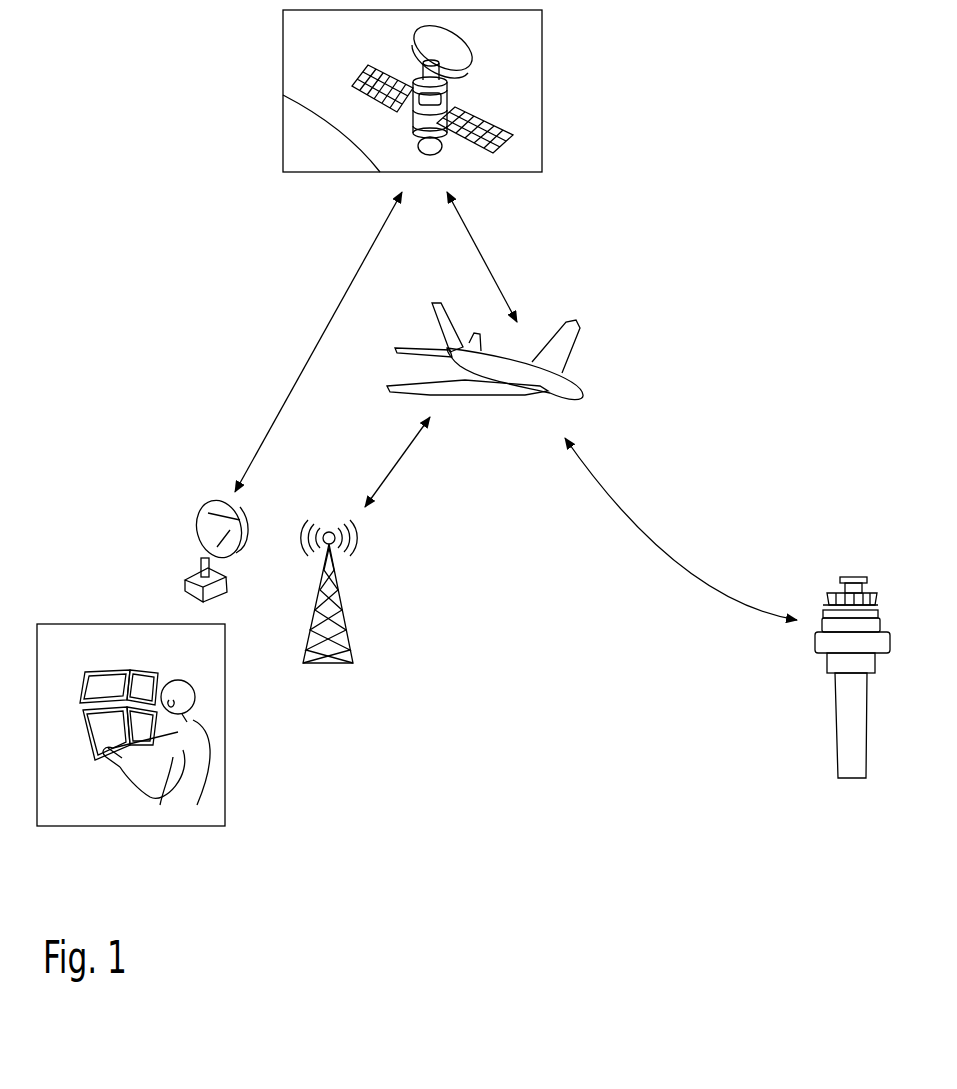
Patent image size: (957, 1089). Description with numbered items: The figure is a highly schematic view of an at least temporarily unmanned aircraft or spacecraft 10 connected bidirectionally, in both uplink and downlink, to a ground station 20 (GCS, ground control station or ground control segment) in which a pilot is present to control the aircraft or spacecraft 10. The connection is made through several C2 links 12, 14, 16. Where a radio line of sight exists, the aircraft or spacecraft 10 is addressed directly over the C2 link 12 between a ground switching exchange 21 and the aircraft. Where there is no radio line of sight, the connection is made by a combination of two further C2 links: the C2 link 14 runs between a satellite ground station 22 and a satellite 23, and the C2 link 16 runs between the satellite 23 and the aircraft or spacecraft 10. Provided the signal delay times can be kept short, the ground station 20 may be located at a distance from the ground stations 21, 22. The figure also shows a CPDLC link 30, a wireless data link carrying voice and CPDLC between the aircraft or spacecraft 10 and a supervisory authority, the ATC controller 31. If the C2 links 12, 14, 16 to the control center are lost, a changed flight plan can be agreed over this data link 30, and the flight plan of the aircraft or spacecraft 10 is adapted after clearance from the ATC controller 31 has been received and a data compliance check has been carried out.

The aircraft or spacecraft 10 is at (590, 366).
The C2 link 12 is at (397, 462).
The C2 link 14 is at (330, 317).
The C2 link 16 is at (498, 280).
The ground station 20 is at (252, 755).
The ground switching exchange 21 is at (350, 640).
The satellite ground station 22 is at (195, 535).
The satellite 23 is at (543, 58).
The CPDLC link 30 is at (640, 532).
The ATC controller 31 is at (833, 713).